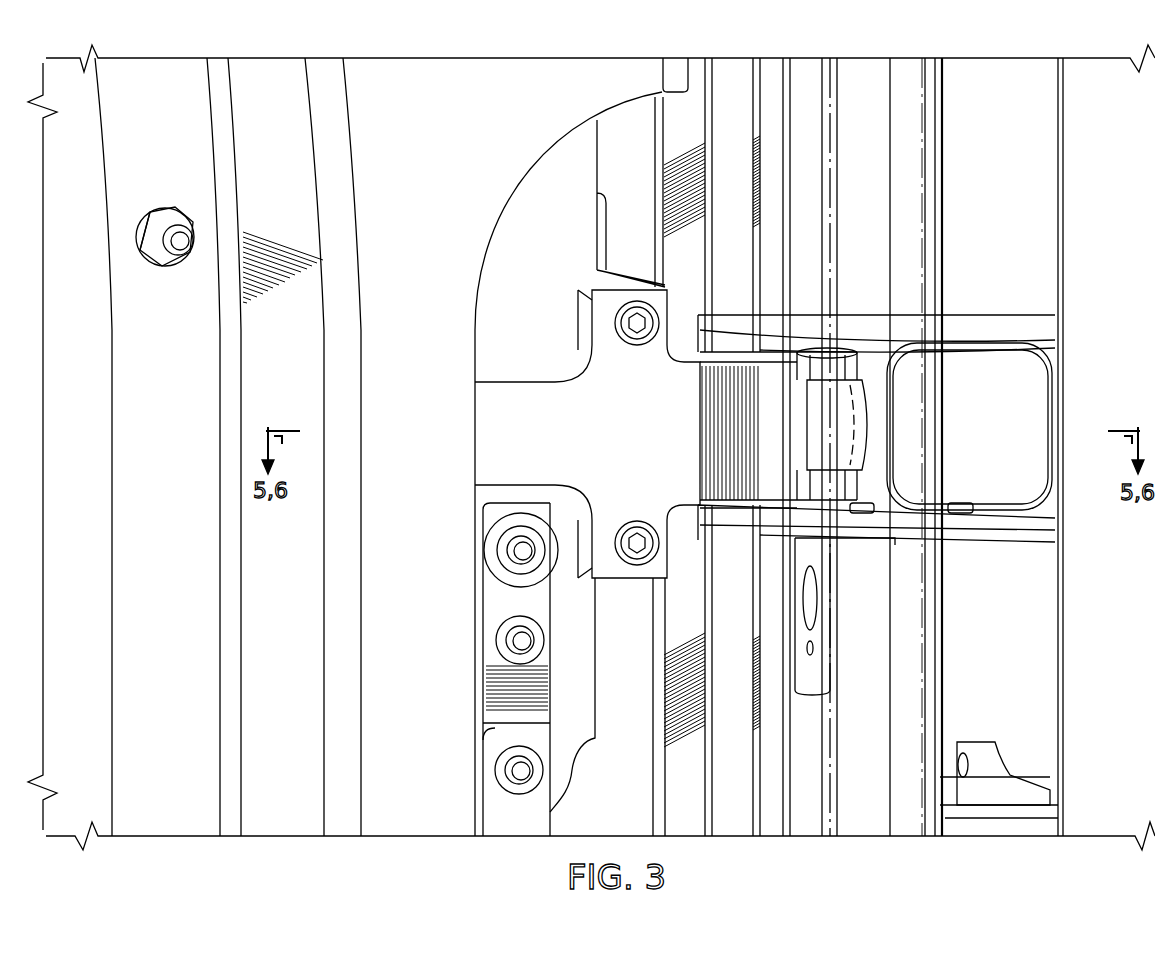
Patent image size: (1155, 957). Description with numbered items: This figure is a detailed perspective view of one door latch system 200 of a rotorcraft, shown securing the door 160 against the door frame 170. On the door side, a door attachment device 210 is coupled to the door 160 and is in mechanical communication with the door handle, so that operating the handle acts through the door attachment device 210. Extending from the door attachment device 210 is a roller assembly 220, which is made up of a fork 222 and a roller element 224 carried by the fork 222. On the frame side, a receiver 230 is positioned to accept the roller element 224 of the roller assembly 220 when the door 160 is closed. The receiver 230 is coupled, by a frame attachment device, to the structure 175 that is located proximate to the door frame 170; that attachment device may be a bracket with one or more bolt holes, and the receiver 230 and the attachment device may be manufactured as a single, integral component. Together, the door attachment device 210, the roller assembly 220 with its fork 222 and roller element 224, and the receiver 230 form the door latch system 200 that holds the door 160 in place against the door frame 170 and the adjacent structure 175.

The door 160 is at (465, 248).
The door frame 170 is at (808, 167).
The structure 175 is at (1146, 197).
The door latch system 200 is at (993, 163).
The door attachment device 210 is at (500, 428).
The roller assembly 220 is at (839, 387).
The fork 222 is at (870, 358).
The roller element 224 is at (870, 422).
The receiver 230 is at (970, 322).